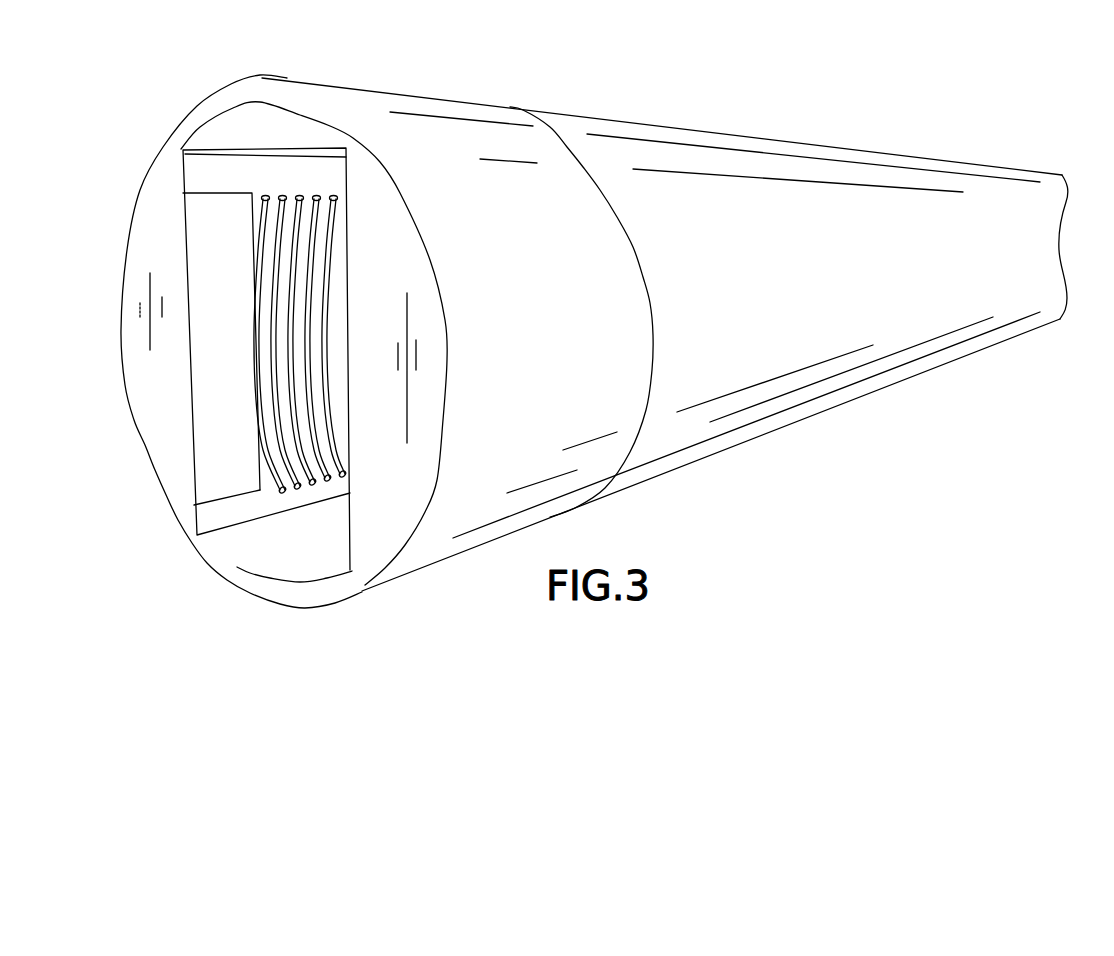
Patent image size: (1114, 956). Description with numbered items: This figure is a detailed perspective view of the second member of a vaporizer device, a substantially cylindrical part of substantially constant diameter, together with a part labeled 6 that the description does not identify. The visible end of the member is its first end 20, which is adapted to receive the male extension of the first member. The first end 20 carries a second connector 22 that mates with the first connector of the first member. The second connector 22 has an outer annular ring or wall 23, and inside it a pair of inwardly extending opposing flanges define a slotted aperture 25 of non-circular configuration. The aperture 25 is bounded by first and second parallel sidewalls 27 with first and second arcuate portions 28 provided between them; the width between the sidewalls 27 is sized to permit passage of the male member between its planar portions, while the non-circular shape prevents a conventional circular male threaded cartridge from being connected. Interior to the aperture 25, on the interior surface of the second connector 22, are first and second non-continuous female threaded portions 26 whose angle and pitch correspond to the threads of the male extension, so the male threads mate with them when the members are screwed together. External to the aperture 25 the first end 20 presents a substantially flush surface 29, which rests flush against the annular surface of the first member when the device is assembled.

The tube 6 is at (940, 140).
The first end 20 is at (268, 357).
The second connector 22 is at (430, 547).
The outer annular ring or wall 23 is at (200, 112).
The slotted aperture 25 is at (220, 540).
The female threaded portion 26 is at (317, 227).
The parallel sidewalls 27 is at (197, 177).
The arcuate portions 28 is at (267, 103).
The flush surface 29 is at (390, 203).